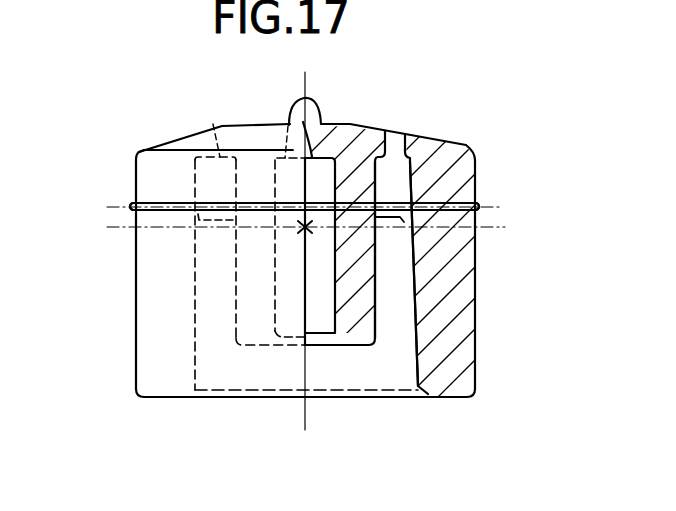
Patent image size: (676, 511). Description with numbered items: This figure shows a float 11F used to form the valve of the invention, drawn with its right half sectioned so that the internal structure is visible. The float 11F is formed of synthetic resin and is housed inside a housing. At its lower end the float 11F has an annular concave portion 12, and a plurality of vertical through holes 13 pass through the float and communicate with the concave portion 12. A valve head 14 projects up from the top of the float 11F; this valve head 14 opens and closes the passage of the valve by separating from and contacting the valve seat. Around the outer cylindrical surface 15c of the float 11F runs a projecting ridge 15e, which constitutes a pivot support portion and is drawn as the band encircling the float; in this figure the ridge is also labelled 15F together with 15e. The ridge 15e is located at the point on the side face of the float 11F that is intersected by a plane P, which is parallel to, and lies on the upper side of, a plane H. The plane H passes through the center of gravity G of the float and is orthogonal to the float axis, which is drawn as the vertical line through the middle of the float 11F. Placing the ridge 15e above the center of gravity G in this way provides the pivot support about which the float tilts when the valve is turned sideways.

The float 11F is at (457, 157).
The concave portion 12 is at (390, 330).
The holes 13 is at (217, 150).
The valve head 14 is at (298, 102).
The flange ring 15F is at (132, 208).
The projecting ridge 15e is at (250, 187).
The cylindrical surface 15c is at (136, 318).
The plane P is at (490, 207).
The plane H is at (500, 228).
The center of gravity G is at (307, 228).